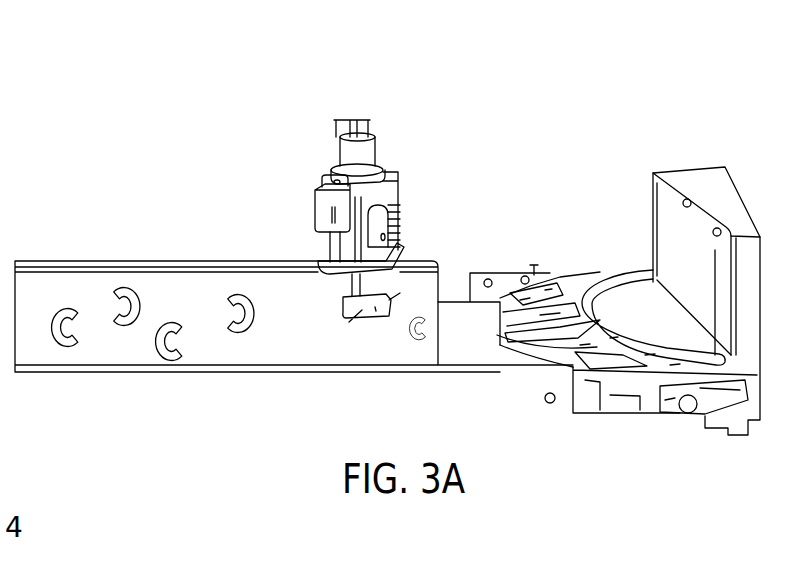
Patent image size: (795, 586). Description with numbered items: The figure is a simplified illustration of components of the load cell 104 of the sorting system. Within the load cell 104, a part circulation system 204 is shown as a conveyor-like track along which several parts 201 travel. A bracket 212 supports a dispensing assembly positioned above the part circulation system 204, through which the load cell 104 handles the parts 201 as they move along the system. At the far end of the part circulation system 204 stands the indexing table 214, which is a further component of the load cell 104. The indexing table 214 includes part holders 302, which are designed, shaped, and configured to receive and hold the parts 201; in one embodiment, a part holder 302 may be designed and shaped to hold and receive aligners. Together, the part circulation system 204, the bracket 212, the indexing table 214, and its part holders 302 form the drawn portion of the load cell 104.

The load cell 104 is at (348, 97).
The parts 201 is at (72, 347).
The part circulation system 204 is at (75, 280).
The bracket 212 is at (325, 262).
The indexing table 214 is at (643, 179).
The part holders 302 is at (680, 417).